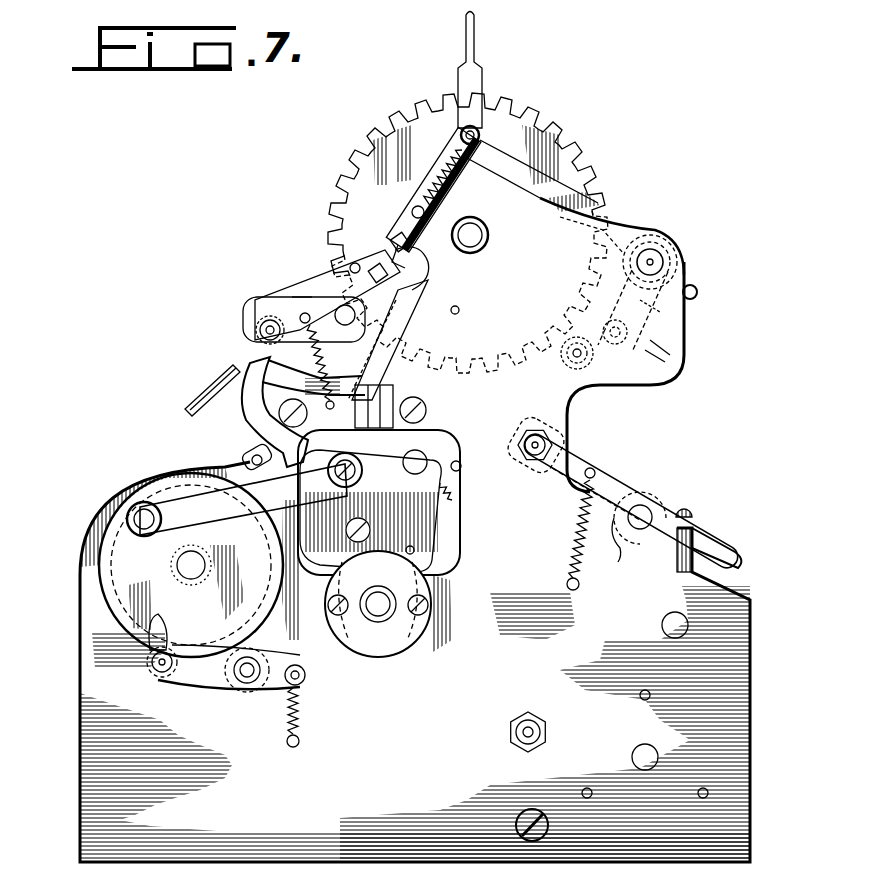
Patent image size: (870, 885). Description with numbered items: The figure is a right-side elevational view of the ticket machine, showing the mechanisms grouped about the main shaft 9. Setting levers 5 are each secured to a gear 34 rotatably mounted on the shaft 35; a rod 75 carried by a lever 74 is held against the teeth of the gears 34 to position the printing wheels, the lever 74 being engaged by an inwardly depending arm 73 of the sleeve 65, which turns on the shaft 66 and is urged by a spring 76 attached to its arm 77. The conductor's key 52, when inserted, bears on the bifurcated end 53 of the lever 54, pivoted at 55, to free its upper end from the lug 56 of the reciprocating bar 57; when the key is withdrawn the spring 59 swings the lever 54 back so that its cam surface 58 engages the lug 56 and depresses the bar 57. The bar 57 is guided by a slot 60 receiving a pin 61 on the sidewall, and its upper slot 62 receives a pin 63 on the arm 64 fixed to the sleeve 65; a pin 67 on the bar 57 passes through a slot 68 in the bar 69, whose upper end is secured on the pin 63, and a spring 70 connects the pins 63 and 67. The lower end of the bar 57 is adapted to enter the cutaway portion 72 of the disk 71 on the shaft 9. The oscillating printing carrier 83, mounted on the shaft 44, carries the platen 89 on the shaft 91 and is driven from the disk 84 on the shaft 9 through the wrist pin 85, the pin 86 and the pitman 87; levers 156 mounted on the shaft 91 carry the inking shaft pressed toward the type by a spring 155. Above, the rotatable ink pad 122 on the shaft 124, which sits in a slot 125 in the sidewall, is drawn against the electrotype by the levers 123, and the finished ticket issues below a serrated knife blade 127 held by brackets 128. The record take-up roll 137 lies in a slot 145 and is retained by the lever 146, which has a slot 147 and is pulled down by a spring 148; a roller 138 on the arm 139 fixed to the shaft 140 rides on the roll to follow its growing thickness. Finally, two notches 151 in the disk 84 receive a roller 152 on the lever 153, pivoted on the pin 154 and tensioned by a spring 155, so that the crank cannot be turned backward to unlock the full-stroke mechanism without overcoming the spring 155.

The lever 5 is at (475, 50).
The shaft 9 is at (177, 565).
The gear 34 is at (592, 168).
The shaft 35 is at (540, 182).
The shaft 44 is at (377, 618).
The key 52 is at (382, 398).
The bifurcated end 53 is at (368, 458).
The lever 54 is at (452, 314).
The pivot 55 is at (268, 398).
The lug 56 is at (340, 246).
The reciprocating bar 57 is at (333, 343).
The cam surface 58 is at (352, 264).
The spring 59 is at (262, 300).
The slot 60 is at (240, 402).
The pin 61 is at (248, 448).
The slot 62 is at (478, 128).
The pin 63 is at (463, 130).
The arm 64 is at (535, 185).
The sleeve 65 is at (652, 250).
The shaft 66 is at (655, 262).
The pin 67 is at (410, 205).
The slot 68 is at (395, 235).
The bar 69 is at (435, 165).
The spring 70 is at (372, 268).
The disk 71 is at (110, 547).
The cutaway portion 72 is at (266, 490).
The arm 73 is at (640, 318).
The lever 74 is at (668, 295).
The rod 75 is at (584, 366).
The spring 76 is at (660, 346).
The arm 77 is at (694, 286).
The oscillating printing carrier 83 is at (432, 520).
The disk 84 is at (105, 592).
The wrist pin 85 is at (142, 516).
The pin 86 is at (365, 487).
The pitman 87 is at (201, 561).
The platen 89 is at (445, 440).
The shaft 91 is at (418, 460).
The ink pad 122 is at (268, 318).
The lever 123 is at (300, 300).
The shaft 124 is at (262, 326).
The slot 125 is at (300, 312).
The serrated knife blade 127 is at (214, 380).
The bracket 128 is at (208, 384).
The take-up roll 137 is at (648, 514).
The roller 138 is at (692, 516).
The arm 139 is at (705, 561).
The shaft 140 is at (662, 626).
The slot 145 is at (645, 508).
The lever 146 is at (608, 472).
The slot 147 is at (624, 544).
The spring 148 is at (580, 522).
The notch 151 is at (160, 632).
The roller 152 is at (170, 674).
The lever 153 is at (224, 682).
The pin 154 is at (252, 684).
The spring 155 is at (450, 490).
The lever 156 is at (460, 464).